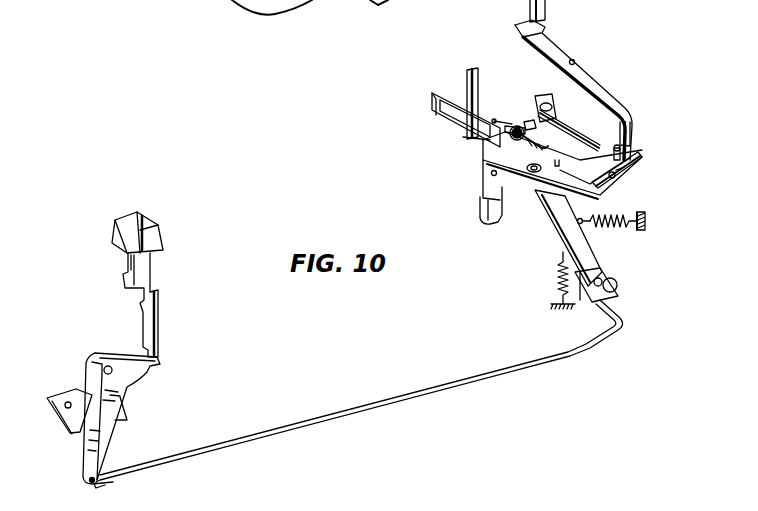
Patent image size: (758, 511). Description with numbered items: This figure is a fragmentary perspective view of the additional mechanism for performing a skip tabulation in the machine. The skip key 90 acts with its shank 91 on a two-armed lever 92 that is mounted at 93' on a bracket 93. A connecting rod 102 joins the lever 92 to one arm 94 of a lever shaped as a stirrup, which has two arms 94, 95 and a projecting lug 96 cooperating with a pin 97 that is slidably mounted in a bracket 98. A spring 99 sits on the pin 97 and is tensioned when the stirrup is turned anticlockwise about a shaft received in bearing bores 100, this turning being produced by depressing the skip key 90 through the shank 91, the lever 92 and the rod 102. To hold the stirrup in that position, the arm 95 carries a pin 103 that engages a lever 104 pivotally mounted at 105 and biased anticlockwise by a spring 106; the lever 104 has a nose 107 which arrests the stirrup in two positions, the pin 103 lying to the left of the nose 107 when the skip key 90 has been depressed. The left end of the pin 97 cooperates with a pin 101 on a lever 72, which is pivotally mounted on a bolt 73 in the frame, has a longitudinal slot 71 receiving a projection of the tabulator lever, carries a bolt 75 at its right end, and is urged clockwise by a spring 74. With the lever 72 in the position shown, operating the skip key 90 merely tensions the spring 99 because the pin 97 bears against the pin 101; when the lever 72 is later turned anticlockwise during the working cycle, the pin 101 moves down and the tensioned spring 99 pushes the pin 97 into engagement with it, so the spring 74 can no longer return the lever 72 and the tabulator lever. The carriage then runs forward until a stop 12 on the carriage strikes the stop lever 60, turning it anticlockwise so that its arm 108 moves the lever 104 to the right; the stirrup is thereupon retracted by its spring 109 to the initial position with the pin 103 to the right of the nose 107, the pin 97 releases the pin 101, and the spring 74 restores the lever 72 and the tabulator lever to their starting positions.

The stop 12 is at (546, 12).
The stop lever 60 is at (592, 78).
The longitudinal slot 71 is at (446, 114).
The lever 72 is at (480, 215).
The bolt 73 is at (483, 170).
The spring 74 is at (562, 285).
The bolt 75 is at (617, 287).
The skip key 90 is at (160, 237).
The shank 91 is at (156, 315).
The two-armed lever 92 is at (147, 370).
The bracket 93 is at (60, 413).
The mounting point 93' is at (117, 346).
The stirrup arm 94 is at (588, 254).
The stirrup arm 95 is at (587, 152).
The projecting lug 96 is at (530, 122).
The pin 97 is at (504, 124).
The bracket 98 is at (516, 125).
The spring 99 is at (527, 149).
The bearing bores 100 is at (549, 112).
The pin 101 is at (485, 141).
The connecting rod 102 is at (398, 400).
The pin 103 is at (633, 148).
The lever 104 is at (598, 187).
The pivot 105 is at (531, 188).
The spring 106 is at (548, 150).
The nose 107 is at (613, 177).
The arm 108 is at (628, 136).
The spring 109 is at (607, 230).